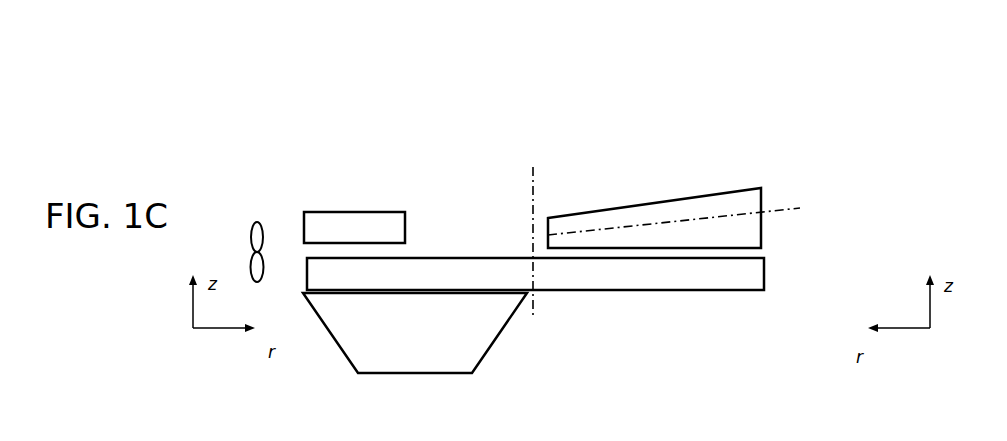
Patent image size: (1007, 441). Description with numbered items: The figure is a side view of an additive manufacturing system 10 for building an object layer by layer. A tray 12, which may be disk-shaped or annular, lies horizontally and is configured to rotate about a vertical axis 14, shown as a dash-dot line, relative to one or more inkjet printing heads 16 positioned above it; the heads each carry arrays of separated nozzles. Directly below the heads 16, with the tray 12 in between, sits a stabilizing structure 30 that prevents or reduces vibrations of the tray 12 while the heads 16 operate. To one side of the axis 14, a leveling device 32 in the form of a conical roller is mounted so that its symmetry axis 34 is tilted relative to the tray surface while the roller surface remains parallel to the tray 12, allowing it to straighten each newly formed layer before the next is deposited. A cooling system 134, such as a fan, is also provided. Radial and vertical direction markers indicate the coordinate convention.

The system 10 is at (248, 50).
The tray 12 is at (754, 278).
The vertical axis 14 is at (533, 210).
The inkjet printing heads 16 is at (327, 220).
The stabilizing structure 30 is at (418, 347).
The leveling device 32 is at (683, 200).
The symmetry axis 34 is at (793, 205).
The cooling system 134 is at (254, 248).